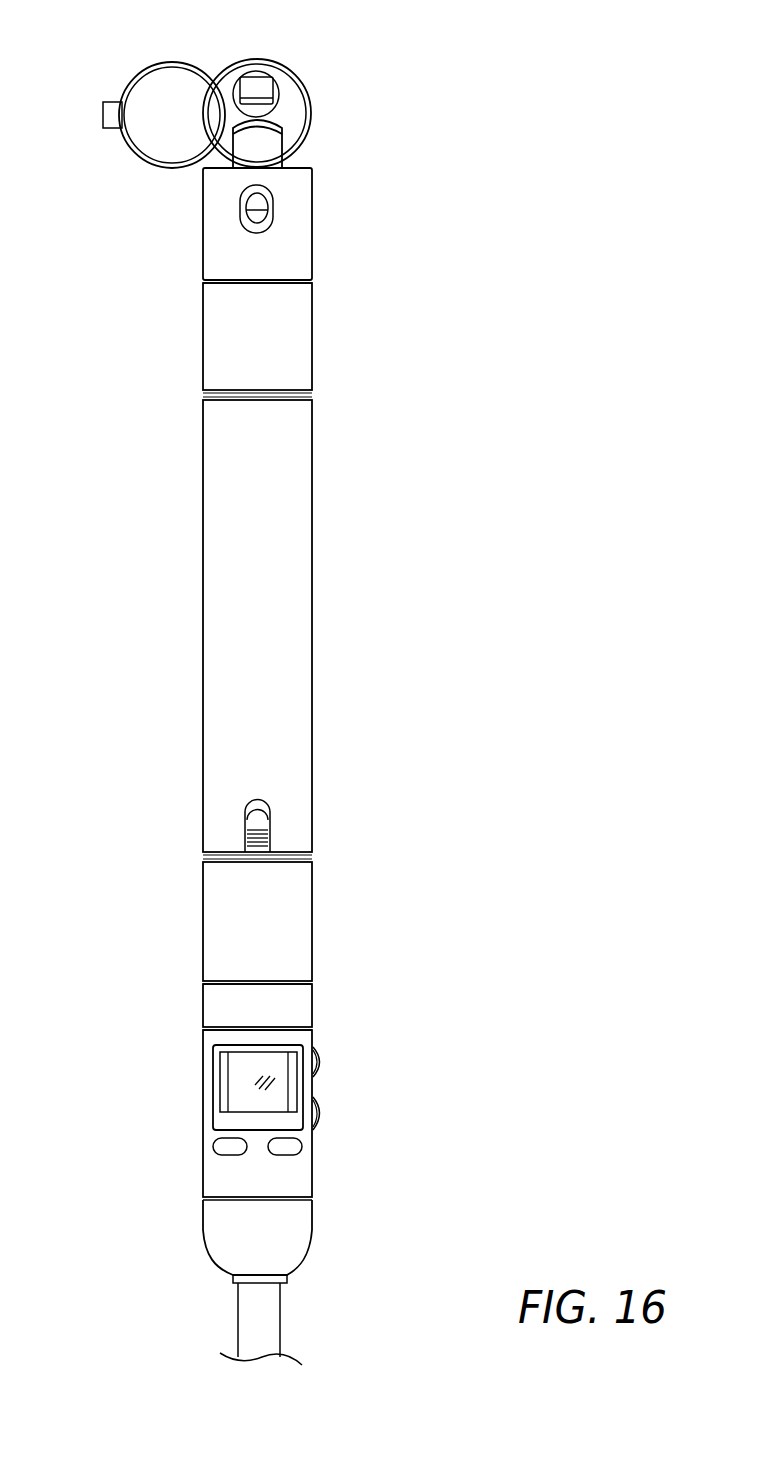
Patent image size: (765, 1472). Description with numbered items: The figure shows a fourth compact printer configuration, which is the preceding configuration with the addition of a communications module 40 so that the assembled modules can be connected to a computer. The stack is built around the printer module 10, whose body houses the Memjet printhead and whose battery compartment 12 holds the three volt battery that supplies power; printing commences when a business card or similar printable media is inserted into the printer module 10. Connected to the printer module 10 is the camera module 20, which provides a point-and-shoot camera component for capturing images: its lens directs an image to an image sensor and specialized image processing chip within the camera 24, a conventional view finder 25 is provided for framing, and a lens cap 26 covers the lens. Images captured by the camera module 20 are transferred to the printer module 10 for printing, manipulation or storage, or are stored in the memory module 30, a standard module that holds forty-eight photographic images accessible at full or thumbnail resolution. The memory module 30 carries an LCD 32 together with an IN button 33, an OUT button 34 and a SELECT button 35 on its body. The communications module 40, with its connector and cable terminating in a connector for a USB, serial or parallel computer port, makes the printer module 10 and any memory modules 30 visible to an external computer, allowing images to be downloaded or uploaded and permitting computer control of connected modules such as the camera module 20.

The printer module 10 is at (312, 672).
The battery compartment 12 is at (312, 905).
The camera module 20 is at (313, 240).
The camera 24 is at (313, 118).
The view finder 25 is at (262, 88).
The lens cap 26 is at (130, 82).
The memory module 30 is at (313, 1105).
The LCD 32 is at (240, 1087).
The IN button 33 is at (213, 1147).
The OUT button 34 is at (302, 1147).
The SELECT button 35 is at (323, 1042).
The communications module 40 is at (310, 1253).